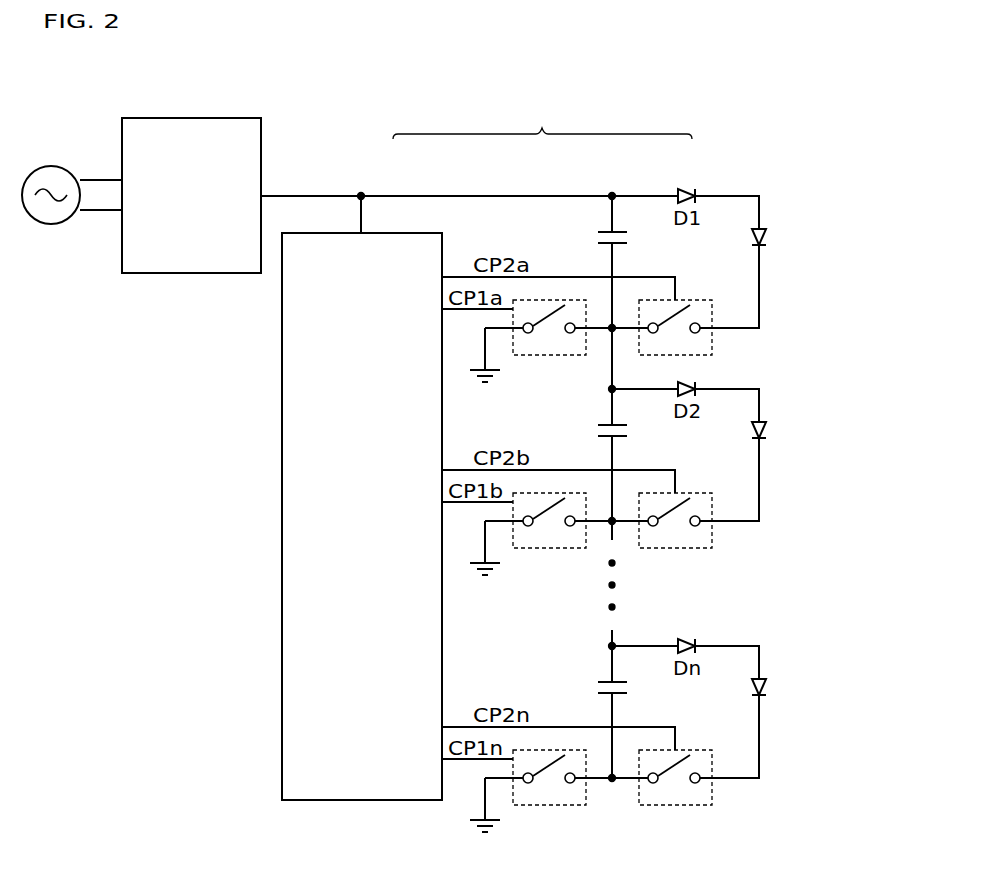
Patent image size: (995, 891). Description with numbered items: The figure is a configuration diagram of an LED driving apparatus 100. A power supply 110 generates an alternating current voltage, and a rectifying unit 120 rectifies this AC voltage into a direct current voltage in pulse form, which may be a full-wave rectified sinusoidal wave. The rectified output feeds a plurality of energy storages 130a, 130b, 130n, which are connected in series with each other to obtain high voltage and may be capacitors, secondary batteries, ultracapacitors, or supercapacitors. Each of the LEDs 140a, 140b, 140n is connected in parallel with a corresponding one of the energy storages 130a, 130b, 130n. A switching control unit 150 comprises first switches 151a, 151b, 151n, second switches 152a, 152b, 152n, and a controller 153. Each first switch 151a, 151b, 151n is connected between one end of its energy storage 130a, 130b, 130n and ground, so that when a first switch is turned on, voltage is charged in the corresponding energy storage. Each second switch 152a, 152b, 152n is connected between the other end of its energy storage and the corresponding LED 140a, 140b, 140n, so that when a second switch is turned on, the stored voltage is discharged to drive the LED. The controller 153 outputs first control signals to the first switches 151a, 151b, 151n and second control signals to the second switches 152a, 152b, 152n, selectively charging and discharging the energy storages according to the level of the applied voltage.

The LED driving apparatus 100 is at (71, 77).
The power supply 110 is at (49, 227).
The rectifying unit 120 is at (262, 145).
The energy storage 130a is at (598, 236).
The energy storage 130b is at (658, 464).
The energy storage 130n is at (658, 712).
The LED 140a is at (767, 237).
The LED 140b is at (810, 432).
The LED 140n is at (810, 689).
The switching control unit 150 is at (542, 120).
The first switch 151a is at (532, 299).
The first switch 151b is at (549, 557).
The first switch 151n is at (549, 814).
The second switch 152a is at (660, 299).
The second switch 152b is at (675, 557).
The second switch 152n is at (675, 814).
The controller 153 is at (427, 232).